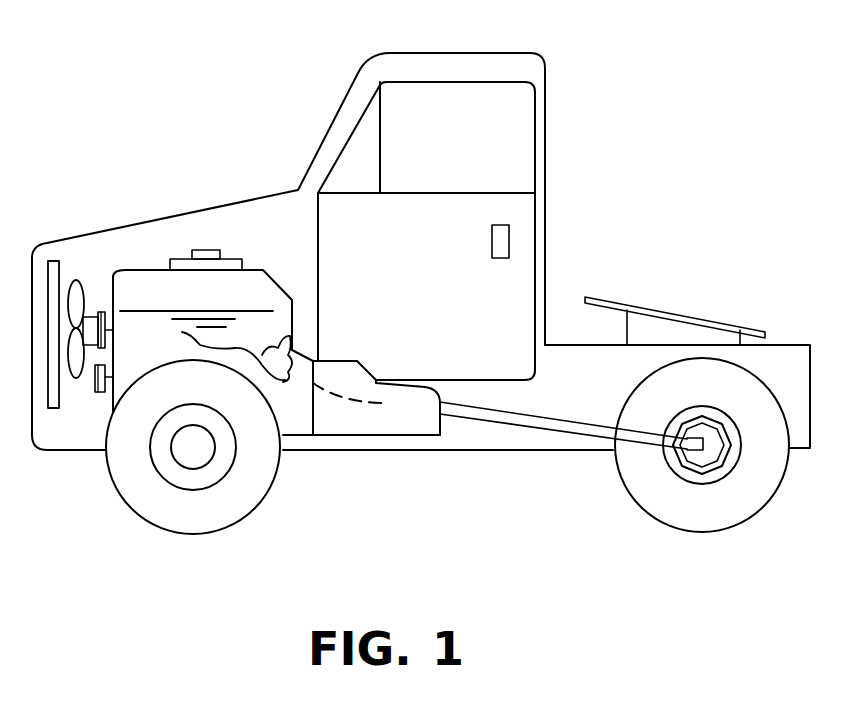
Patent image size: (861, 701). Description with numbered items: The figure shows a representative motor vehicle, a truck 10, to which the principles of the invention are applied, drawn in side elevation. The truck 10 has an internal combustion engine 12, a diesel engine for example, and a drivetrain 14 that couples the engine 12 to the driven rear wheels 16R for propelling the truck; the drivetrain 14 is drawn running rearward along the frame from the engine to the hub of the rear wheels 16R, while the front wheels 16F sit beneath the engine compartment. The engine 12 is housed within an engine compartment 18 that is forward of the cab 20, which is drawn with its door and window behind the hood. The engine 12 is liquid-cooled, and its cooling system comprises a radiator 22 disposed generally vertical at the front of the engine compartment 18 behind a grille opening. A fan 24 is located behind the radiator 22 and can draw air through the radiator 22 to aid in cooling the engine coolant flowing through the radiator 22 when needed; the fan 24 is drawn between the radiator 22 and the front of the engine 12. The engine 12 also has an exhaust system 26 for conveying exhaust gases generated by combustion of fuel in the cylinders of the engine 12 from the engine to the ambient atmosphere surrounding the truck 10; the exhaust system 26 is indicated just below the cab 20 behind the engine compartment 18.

The truck 10 is at (650, 80).
The internal combustion engine 12 is at (213, 299).
The drivetrain 14 is at (439, 442).
The front wheel 16F is at (257, 510).
The driven rear wheels 16R is at (684, 533).
The engine compartment 18 is at (198, 222).
The cab 20 is at (538, 55).
The radiator 22 is at (58, 262).
The fan 24 is at (82, 282).
The exhaust system 26 is at (327, 384).